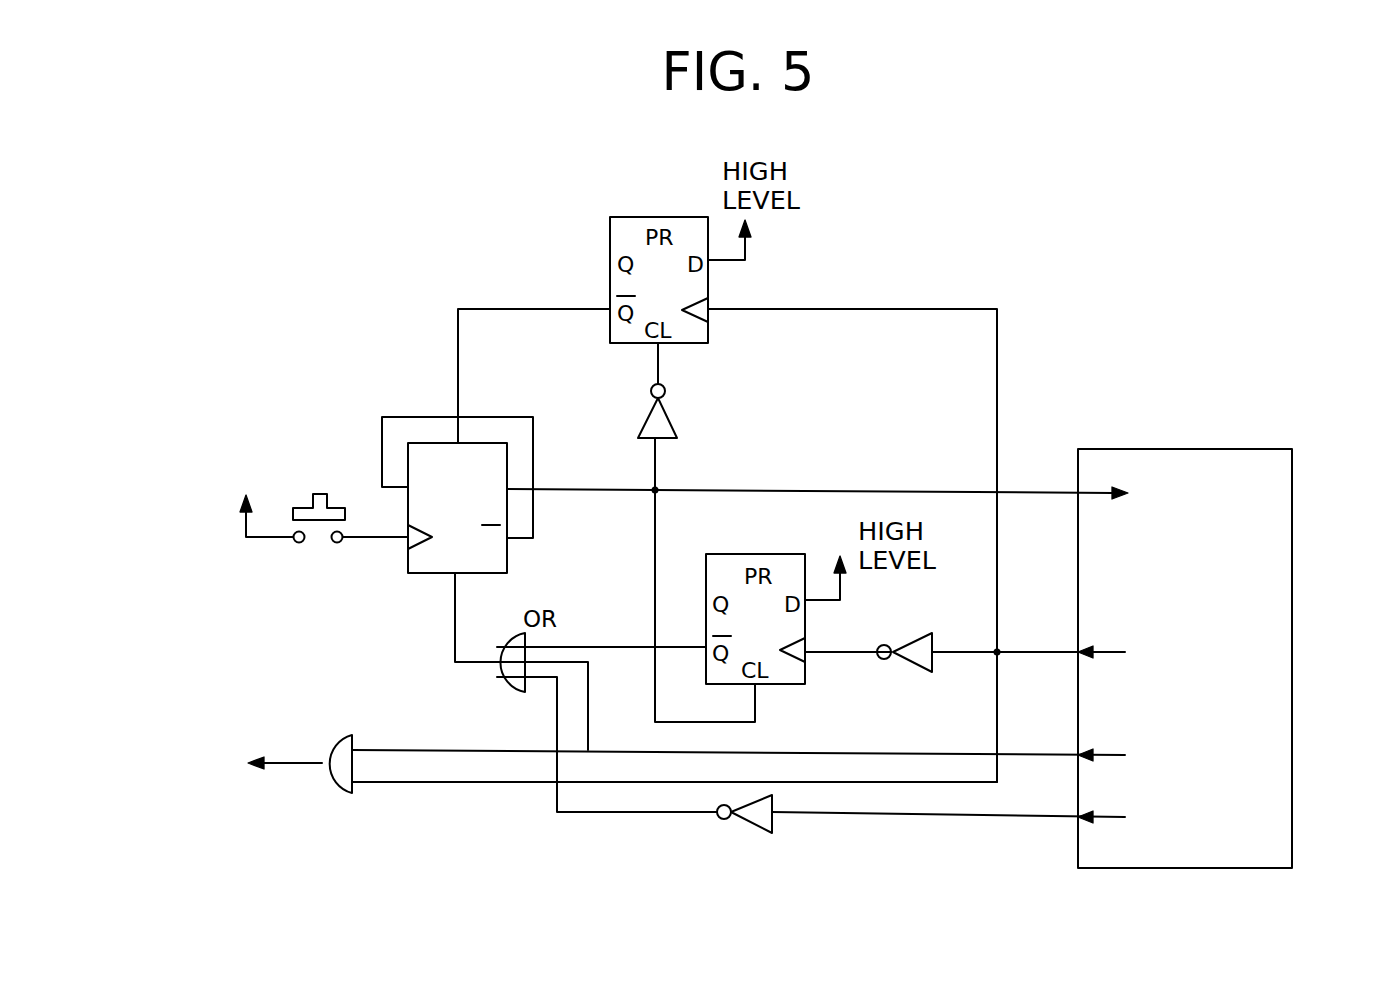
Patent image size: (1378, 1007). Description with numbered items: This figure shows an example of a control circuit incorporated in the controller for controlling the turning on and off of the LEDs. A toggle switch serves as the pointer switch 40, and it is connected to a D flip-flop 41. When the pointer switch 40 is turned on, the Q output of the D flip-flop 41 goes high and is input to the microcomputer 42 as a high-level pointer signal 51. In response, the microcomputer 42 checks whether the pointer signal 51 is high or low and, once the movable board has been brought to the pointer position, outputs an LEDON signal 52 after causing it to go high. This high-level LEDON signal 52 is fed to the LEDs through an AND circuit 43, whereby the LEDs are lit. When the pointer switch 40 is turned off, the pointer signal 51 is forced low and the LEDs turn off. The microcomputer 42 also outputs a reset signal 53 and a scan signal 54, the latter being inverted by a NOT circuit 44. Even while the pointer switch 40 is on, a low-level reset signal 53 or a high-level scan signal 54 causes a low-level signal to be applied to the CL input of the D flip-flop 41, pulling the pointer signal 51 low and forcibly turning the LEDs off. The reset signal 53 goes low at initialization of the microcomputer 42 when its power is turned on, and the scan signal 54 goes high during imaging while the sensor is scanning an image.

The pointer switch 40 is at (321, 492).
The D flip-flop 41 is at (414, 600).
The microcomputer 42 is at (1278, 449).
The AND circuit 43 is at (338, 794).
The NOT circuit 44 is at (760, 834).
The pointer signal 51 is at (1260, 498).
The LEDON signal 52 is at (1245, 657).
The reset signal 53 is at (1243, 757).
The scan signal 54 is at (1240, 820).